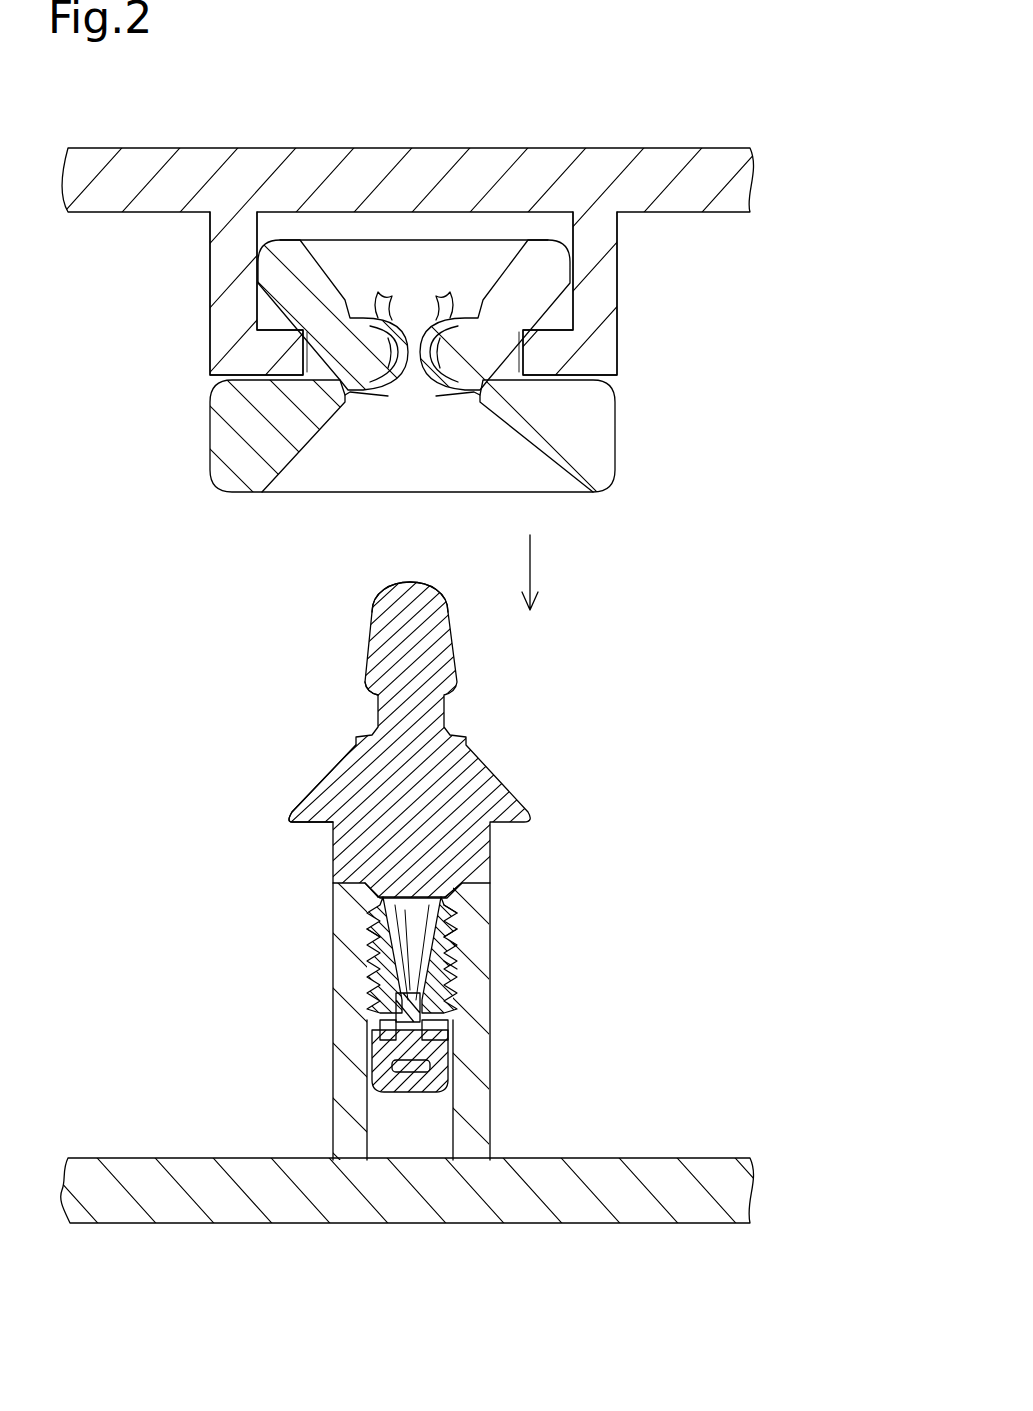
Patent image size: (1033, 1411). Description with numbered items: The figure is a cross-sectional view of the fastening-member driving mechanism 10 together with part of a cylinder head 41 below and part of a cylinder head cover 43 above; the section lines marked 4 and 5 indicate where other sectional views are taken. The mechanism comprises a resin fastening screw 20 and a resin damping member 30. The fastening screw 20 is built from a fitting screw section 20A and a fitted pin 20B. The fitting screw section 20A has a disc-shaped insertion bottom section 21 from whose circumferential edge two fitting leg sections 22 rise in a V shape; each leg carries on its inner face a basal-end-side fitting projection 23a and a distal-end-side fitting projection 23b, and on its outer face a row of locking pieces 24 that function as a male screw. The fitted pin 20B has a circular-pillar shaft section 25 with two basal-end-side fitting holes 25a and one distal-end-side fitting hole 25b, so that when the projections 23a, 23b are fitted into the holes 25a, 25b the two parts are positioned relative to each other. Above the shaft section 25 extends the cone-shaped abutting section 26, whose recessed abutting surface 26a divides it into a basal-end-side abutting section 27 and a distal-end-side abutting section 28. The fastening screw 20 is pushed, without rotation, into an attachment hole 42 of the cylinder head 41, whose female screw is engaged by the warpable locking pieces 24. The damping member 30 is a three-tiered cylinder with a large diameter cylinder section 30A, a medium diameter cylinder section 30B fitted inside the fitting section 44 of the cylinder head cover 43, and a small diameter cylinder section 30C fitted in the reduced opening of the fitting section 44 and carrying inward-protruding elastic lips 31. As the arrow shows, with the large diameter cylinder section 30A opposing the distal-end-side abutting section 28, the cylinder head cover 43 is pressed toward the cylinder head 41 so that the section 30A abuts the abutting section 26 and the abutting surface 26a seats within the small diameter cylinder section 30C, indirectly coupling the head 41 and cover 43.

The fastening-member driving mechanism 10 is at (145, 662).
The fastening screw 20 is at (347, 972).
The fitting screw section 20A is at (326, 1088).
The fitted pin 20B is at (286, 953).
The insertion bottom section 21 is at (410, 1095).
The fitting leg sections 22 is at (372, 905).
The basal-end-side fitting projection 23a is at (432, 1036).
The distal-end-side fitting projection 23b is at (445, 965).
The locking pieces 24 is at (370, 962).
The shaft section 25 is at (420, 1006).
The basal-end-side fitting holes 25a is at (392, 1025).
The distal-end-side fitting hole 25b is at (456, 912).
The abutting section 26 is at (492, 848).
The abutting surface 26a is at (376, 702).
The basal-end-side abutting section 27 is at (314, 825).
The distal-end-side abutting section 28 is at (412, 582).
The damping member 30 is at (483, 627).
The large diameter cylinder section 30A is at (612, 408).
The medium diameter cylinder section 30B is at (618, 316).
The small diameter cylinder section 30C is at (533, 352).
The elastic lips 31 is at (413, 311).
The cylinder head 41 is at (652, 1224).
The attachment hole 42 is at (470, 1138).
The cylinder head cover 43 is at (683, 150).
The fitting section 44 is at (620, 237).
The section line 4- 4 is at (100, 352).
The section line 5- 5 is at (412, 123).